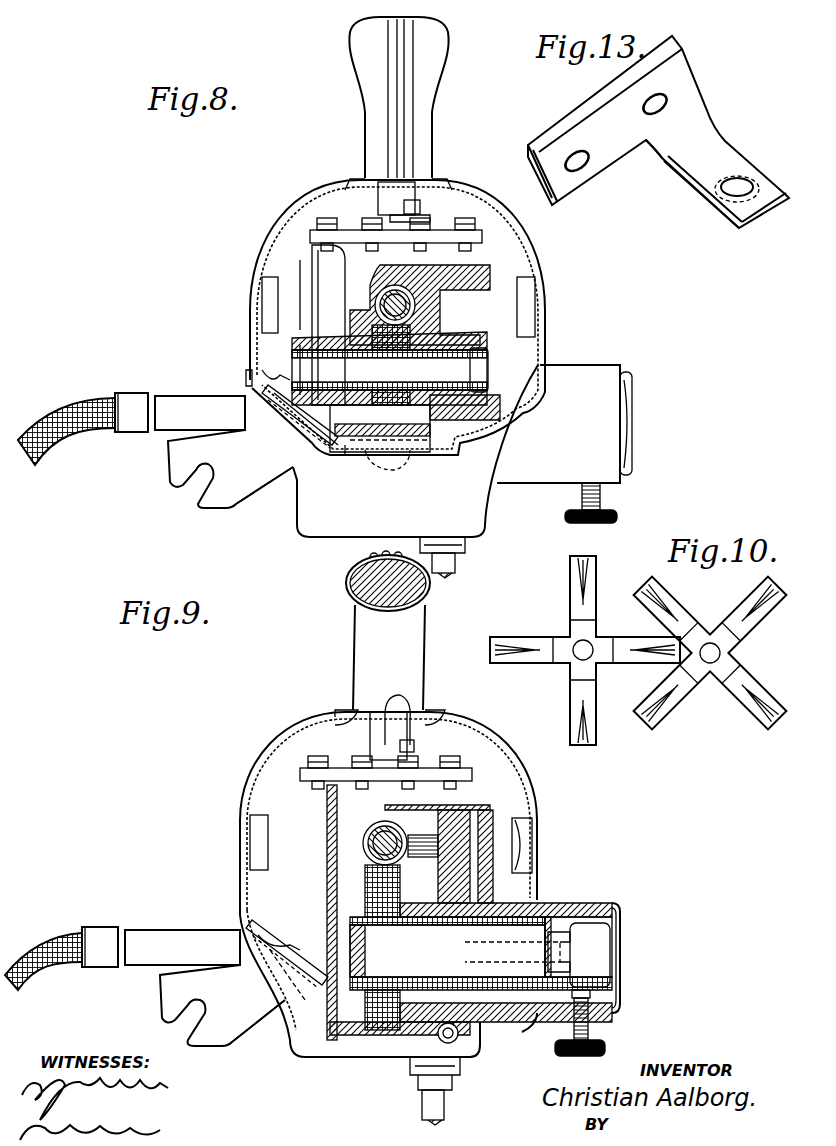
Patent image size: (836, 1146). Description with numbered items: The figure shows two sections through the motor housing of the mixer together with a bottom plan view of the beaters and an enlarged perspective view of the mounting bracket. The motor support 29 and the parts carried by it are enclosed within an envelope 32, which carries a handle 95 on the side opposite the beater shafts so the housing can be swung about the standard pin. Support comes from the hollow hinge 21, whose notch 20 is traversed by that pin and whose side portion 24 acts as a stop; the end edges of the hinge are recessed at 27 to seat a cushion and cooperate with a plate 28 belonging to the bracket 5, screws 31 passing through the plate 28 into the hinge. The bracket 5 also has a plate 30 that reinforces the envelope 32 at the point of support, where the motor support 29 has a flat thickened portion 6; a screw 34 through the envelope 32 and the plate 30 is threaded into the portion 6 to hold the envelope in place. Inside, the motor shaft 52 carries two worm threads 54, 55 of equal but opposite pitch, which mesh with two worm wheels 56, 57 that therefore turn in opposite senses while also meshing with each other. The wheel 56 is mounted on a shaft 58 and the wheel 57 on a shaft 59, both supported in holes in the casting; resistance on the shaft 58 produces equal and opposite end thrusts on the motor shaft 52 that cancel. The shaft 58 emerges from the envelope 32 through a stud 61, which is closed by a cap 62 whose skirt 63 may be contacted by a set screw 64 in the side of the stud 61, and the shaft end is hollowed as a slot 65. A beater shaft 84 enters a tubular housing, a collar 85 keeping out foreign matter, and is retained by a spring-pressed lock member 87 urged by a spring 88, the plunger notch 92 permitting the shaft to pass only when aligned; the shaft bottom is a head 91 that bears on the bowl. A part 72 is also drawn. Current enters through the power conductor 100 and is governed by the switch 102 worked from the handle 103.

In FIG. 8, the bracket 5 is at (325, 448).
In FIG. 13, the bracket 5 is at (689, 52).
In FIG. 9, the bracket 5 is at (333, 990).
In FIG. 8, the flat thickened portion 6 is at (345, 455).
In FIG. 8, the notch 20 is at (192, 487).
In FIG. 9, the notch 20 is at (175, 1020).
In FIG. 8, the hinge 21 is at (168, 470).
In FIG. 9, the hinge 21 is at (250, 1030).
In FIG. 8, the side portion 24 is at (237, 500).
In FIG. 9, the side portion 24 is at (225, 1040).
In FIG. 9, the recessed end 27 is at (290, 988).
In FIG. 8, the plate 28 is at (290, 425).
In FIG. 13, the plate 28 is at (570, 120).
In FIG. 9, the plate 28 is at (285, 950).
In FIG. 8, the motor support 29 is at (432, 340).
In FIG. 9, the motor support 29 is at (505, 820).
In FIG. 8, the plate 30 is at (420, 456).
In FIG. 13, the plate 30 is at (752, 162).
In FIG. 8, the screws 31 is at (272, 372).
In FIG. 9, the screws 31 is at (275, 935).
In FIG. 8, the envelope 32 is at (522, 255).
In FIG. 9, the envelope 32 is at (500, 762).
In FIG. 8, the screw 34 is at (388, 456).
In FIG. 8, the motor shaft 52 is at (385, 290).
In FIG. 9, the motor shaft 52 is at (378, 833).
In FIG. 9, the worm thread 54 is at (384, 828).
In FIG. 8, the worm thread 55 is at (384, 303).
In FIG. 9, the worm wheel 56 is at (393, 1005).
In FIG. 8, the worm wheel 57 is at (352, 335).
In FIG. 9, the shaft 58 is at (432, 968).
In FIG. 8, the shaft 59 is at (470, 380).
In FIG. 8, the stud 61 is at (600, 364).
In FIG. 9, the stud 61 is at (578, 902).
In FIG. 8, the cap 62 is at (634, 420).
In FIG. 9, the cap 62 is at (622, 945).
In FIG. 9, the skirt 63 is at (590, 955).
In FIG. 8, the set screw 64 is at (617, 513).
In FIG. 9, the set screw 64 is at (608, 1052).
In FIG. 9, the slot 65 is at (572, 955).
In FIG. 9, the side plate 72 is at (535, 818).
In FIG. 8, the shaft 84 is at (456, 575).
In FIG. 9, the shaft 84 is at (422, 1108).
In FIG. 8, the collar 85 is at (466, 548).
In FIG. 9, the collar 85 is at (464, 1093).
In FIG. 9, the lock member 87 is at (458, 1040).
In FIG. 9, the spring 88 is at (460, 1032).
In FIG. 10, the head 91 is at (578, 643).
In FIG. 10, the notch 92 is at (598, 622).
In FIG. 8, the handle 95 is at (446, 60).
In FIG. 9, the handle 95 is at (352, 598).
In FIG. 8, the power conductor 100 is at (208, 396).
In FIG. 9, the power conductor 100 is at (168, 928).
In FIG. 8, the switch 102 is at (418, 212).
In FIG. 9, the switch 102 is at (366, 751).
In FIG. 9, the handle 103 is at (405, 695).